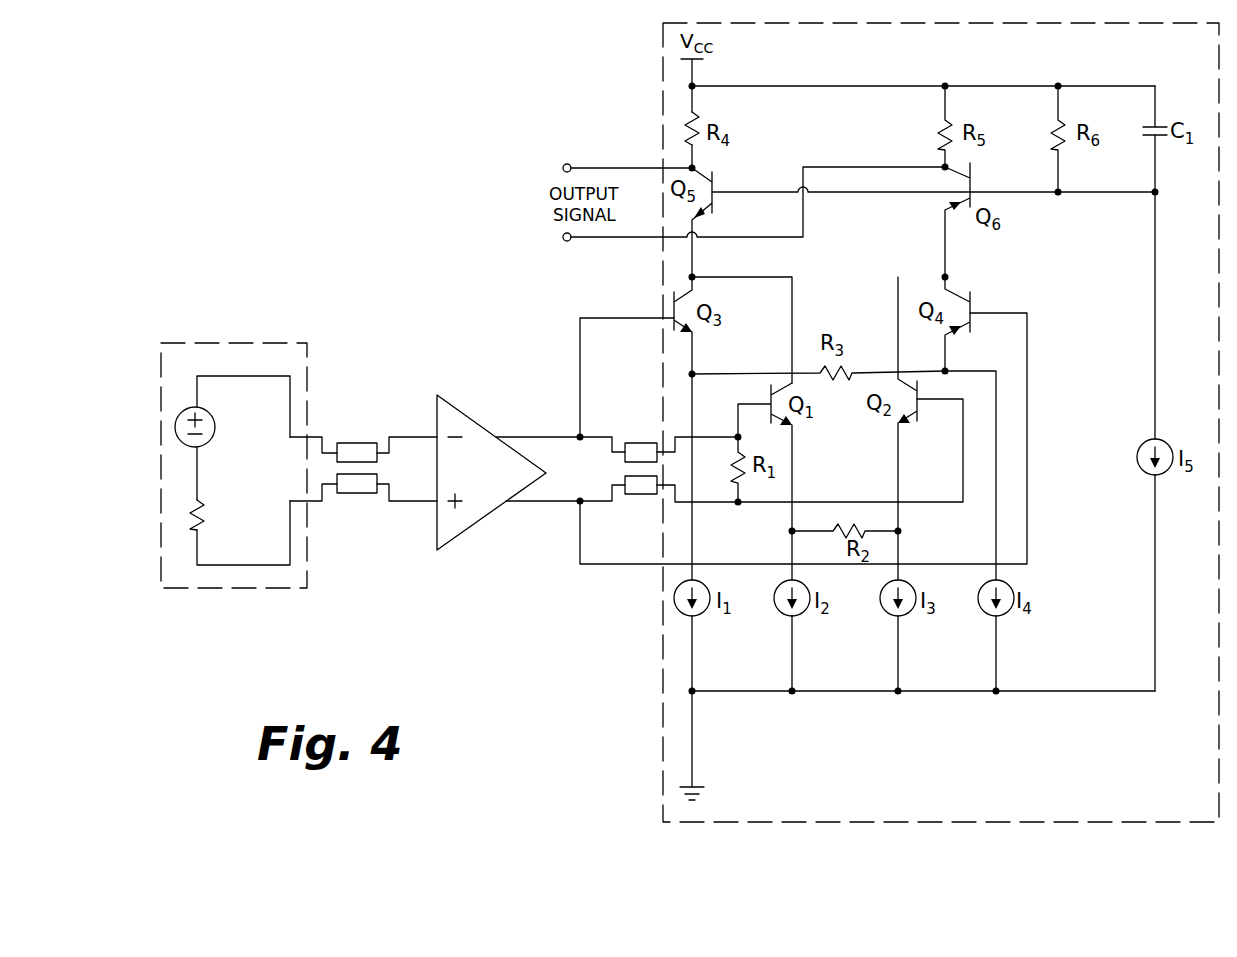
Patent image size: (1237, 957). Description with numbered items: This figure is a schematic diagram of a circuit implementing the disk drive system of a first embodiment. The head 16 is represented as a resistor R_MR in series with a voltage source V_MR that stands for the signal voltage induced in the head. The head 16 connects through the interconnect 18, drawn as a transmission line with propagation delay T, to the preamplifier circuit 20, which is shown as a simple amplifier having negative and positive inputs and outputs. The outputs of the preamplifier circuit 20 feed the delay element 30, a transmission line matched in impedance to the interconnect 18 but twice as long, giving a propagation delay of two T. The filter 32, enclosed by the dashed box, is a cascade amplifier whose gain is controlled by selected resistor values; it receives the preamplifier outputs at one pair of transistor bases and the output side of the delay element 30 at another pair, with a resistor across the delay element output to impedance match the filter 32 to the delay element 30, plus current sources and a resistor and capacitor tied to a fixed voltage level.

The head 16 is at (288, 344).
The interconnect 18 is at (362, 422).
The preamplifier circuit 20 is at (458, 408).
The delay element 30 is at (637, 424).
The filter 32 is at (664, 797).